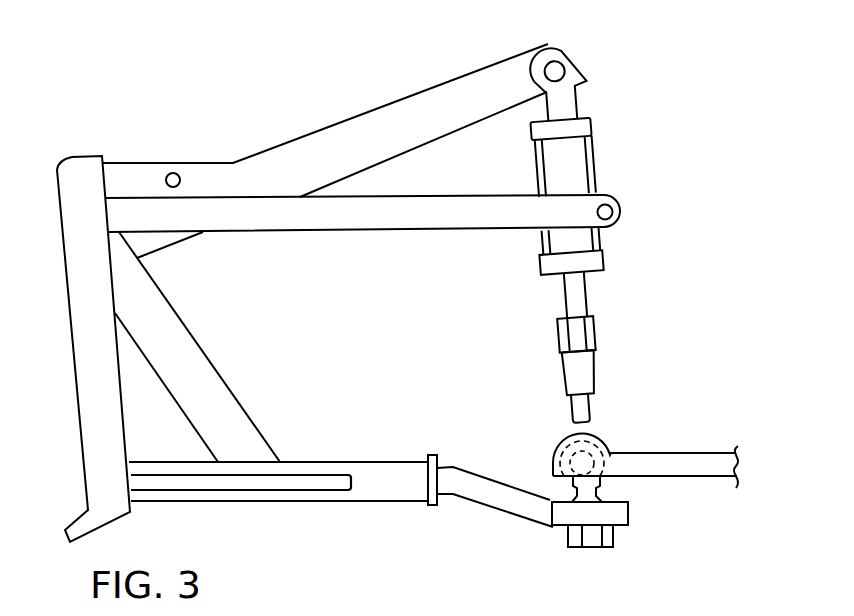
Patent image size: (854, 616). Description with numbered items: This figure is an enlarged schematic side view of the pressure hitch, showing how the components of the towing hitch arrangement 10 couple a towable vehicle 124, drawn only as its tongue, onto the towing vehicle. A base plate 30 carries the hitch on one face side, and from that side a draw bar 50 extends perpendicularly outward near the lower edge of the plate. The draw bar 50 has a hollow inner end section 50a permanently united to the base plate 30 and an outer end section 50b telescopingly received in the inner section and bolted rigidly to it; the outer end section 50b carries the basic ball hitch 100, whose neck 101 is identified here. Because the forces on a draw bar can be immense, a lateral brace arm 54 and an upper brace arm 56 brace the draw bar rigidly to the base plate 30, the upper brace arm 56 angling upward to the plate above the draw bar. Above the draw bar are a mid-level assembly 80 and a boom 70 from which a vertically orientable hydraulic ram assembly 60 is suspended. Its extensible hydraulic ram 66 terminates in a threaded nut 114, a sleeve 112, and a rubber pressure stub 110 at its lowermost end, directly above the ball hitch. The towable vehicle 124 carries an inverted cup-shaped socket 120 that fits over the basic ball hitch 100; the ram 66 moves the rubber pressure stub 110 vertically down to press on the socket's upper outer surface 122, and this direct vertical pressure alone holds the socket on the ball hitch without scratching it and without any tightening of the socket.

The hitch arrangement 10 is at (383, 90).
The base plate 30 is at (121, 419).
The draw bar 50 is at (283, 503).
The inner end section 50a is at (265, 497).
The outer end section 50b is at (502, 495).
The lateral brace arm 54 is at (182, 488).
The upper brace arm 56 is at (192, 370).
The hydraulic ram assembly 60 is at (563, 173).
The hydraulic ram 66 is at (573, 289).
The boom 70 is at (315, 157).
The mid-level assembly 80 is at (411, 222).
The basic ball hitch 100 is at (583, 462).
The neck 101 is at (607, 486).
The rubber pressure stub 110 is at (580, 412).
The sleeve 112 is at (580, 373).
The threaded nut 114 is at (585, 335).
The inverted cup-shaped socket 120 is at (553, 463).
The upper outer surface 122 is at (587, 430).
The towable vehicle 124 is at (703, 463).